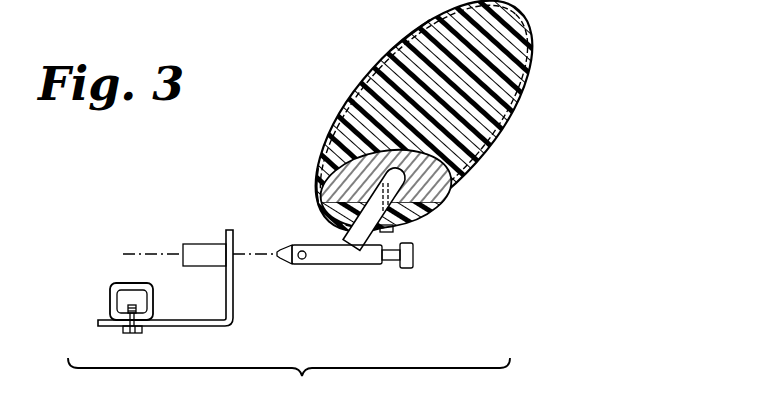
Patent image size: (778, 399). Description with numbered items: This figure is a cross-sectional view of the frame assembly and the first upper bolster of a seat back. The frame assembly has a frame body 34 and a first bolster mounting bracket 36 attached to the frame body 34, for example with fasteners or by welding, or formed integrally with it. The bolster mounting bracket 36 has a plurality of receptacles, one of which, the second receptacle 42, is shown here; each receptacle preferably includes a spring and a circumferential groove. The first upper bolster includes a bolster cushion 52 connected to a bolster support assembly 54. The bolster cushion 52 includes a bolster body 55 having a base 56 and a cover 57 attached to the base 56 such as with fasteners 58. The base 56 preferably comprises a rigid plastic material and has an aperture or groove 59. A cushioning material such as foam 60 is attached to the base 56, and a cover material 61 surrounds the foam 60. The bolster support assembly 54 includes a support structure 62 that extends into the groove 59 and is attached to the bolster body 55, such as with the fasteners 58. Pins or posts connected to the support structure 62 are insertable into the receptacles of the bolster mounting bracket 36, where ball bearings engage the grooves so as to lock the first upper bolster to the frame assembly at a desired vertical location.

The frame body 34 is at (110, 292).
The first bolster mounting bracket 36 is at (233, 293).
The second receptacle 42 is at (190, 244).
The bolster cushion 52 is at (558, 49).
The bolster support assembly 54 is at (390, 286).
The bolster body 55 is at (447, 150).
The base 56 is at (460, 170).
The cover 57 is at (412, 214).
The fasteners 58 is at (402, 228).
The groove 59 is at (318, 186).
The foam 60 is at (527, 70).
The cover material 61 is at (410, 34).
The support structure 62 is at (340, 238).